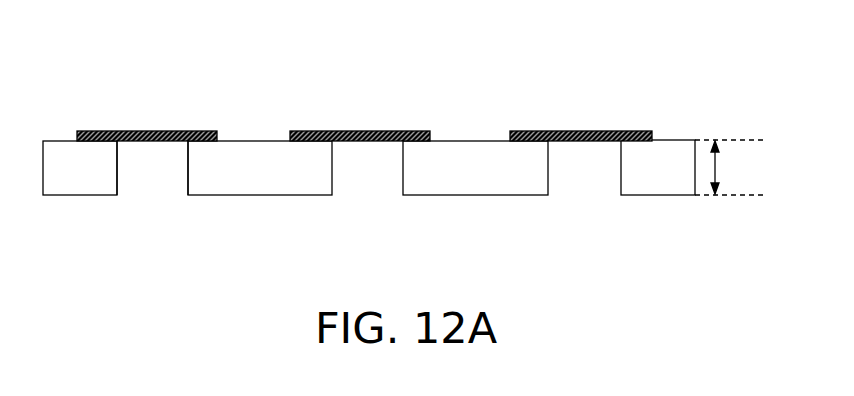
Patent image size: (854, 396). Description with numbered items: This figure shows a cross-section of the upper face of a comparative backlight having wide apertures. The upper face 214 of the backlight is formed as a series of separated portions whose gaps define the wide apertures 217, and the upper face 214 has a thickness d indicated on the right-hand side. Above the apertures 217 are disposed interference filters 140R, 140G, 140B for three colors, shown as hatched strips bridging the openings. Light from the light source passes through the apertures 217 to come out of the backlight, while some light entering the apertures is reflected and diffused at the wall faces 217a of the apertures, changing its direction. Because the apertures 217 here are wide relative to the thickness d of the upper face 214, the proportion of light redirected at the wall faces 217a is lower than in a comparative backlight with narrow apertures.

The interference filter 140R is at (150, 133).
The interference filter 140G is at (352, 133).
The interference filter 140B is at (567, 133).
The upper face 214 is at (660, 153).
The aperture 217 is at (149, 175).
The wall face 217a is at (117, 168).
The thickness d is at (731, 167).